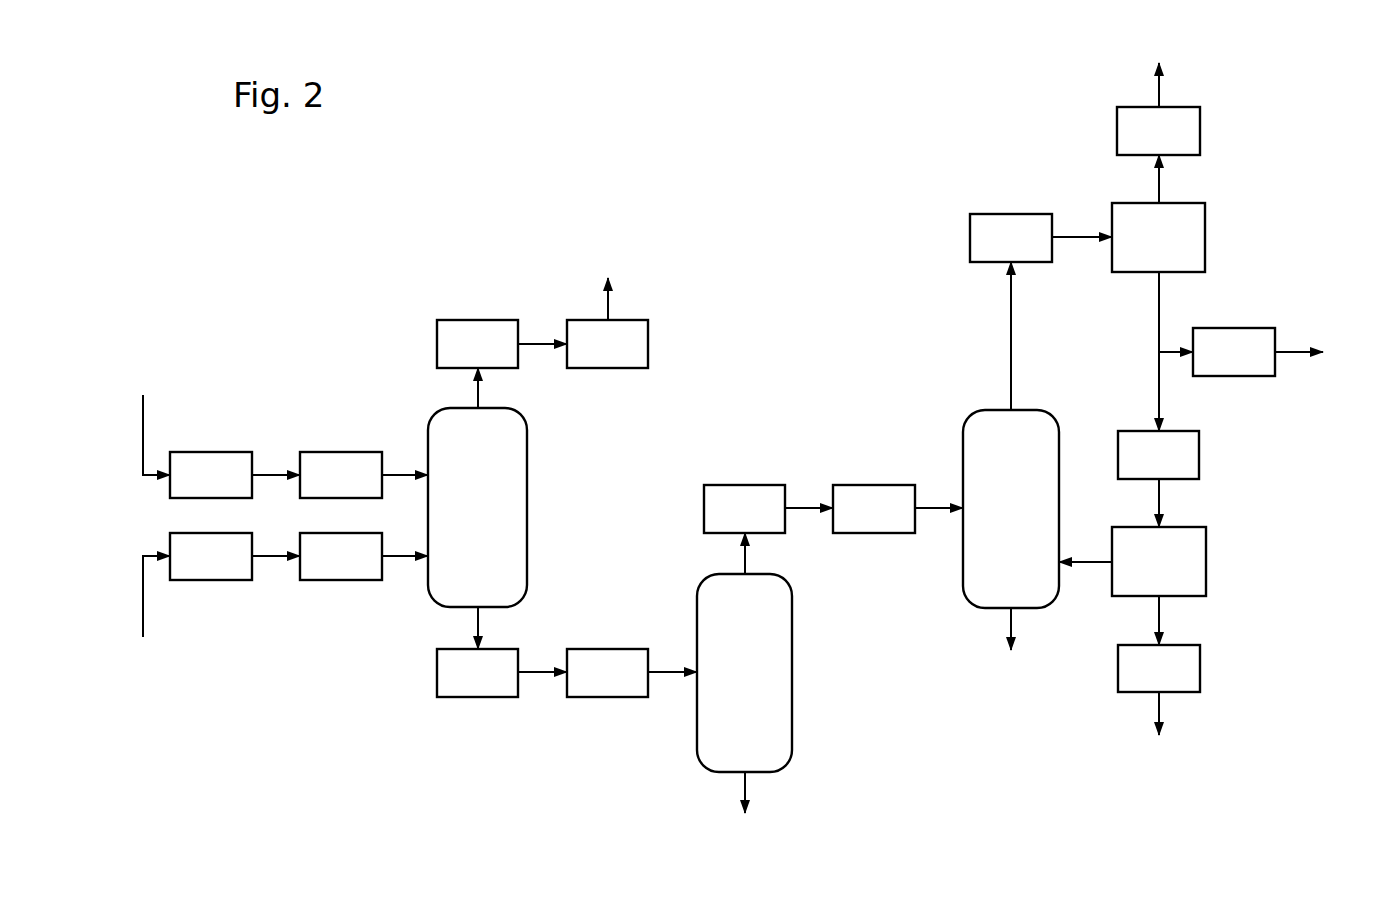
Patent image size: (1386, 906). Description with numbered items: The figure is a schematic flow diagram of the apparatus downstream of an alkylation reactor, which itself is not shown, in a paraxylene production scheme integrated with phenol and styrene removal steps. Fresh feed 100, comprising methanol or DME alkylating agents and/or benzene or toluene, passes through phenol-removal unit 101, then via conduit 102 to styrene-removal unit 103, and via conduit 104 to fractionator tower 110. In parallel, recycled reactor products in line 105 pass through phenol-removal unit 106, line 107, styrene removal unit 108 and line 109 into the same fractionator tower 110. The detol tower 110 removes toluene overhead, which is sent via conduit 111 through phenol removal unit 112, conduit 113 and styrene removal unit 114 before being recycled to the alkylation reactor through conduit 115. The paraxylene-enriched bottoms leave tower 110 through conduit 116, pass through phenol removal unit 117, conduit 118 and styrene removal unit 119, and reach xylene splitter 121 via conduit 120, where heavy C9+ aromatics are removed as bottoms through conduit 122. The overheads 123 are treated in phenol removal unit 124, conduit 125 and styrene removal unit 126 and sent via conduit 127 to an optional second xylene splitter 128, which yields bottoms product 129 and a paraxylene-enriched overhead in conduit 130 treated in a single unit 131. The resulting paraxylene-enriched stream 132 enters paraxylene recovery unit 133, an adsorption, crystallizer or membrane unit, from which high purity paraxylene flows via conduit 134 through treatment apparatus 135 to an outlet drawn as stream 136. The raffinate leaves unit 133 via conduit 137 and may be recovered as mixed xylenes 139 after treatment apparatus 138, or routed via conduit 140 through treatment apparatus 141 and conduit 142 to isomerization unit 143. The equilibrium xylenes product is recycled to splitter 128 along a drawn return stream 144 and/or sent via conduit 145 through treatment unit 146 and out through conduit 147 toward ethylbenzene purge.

The fresh feed 100 is at (143, 417).
The phenol-removal unit 101 is at (189, 487).
The conduit 102 is at (270, 475).
The styrene-removal unit 103 is at (319, 487).
The conduit 104 is at (410, 468).
The recycled reactor products line 105 is at (143, 613).
The phenol-removal unit 106 is at (189, 569).
The line 107 is at (268, 556).
The styrene removal unit 108 is at (319, 569).
The line 109 is at (408, 565).
The fractionator tower 110 is at (455, 520).
The conduit 111 is at (478, 395).
The phenol removal unit 112 is at (456, 356).
The conduit 113 is at (532, 343).
The styrene removal unit 114 is at (586, 356).
The conduit 115 is at (608, 305).
The conduit 116 is at (478, 621).
The phenol removal unit 117 is at (456, 685).
The conduit 118 is at (530, 672).
The styrene removal unit 119 is at (586, 685).
The conduit 120 is at (668, 672).
The xylene splitter 121 is at (722, 685).
The conduit 122 is at (745, 785).
The overheads 123 is at (745, 557).
The phenol removal unit 124 is at (723, 521).
The conduit 125 is at (800, 508).
The styrene removal unit 126 is at (852, 521).
The conduit 127 is at (932, 508).
The second xylene splitter 128 is at (988, 521).
The bottoms product 129 is at (1009, 622).
The overheads conduit 130 is at (1011, 323).
The phenol/styrene removal unit 131 is at (989, 250).
The paraxylene-enriched stream 132 is at (1083, 232).
The paraxylene recovery unit 133 is at (1136, 250).
The conduit 134 is at (1162, 185).
The phenol/styrene removal apparatus 135 is at (1137, 143).
The product outlet stream 136 is at (1162, 93).
The conduit 137 is at (1162, 308).
The styrene/phenol removal apparatus 138 is at (1212, 364).
The mixed xylenes 139 is at (1288, 345).
The conduit 140 is at (1162, 395).
The styrene/phenol removal apparatus 141 is at (1137, 467).
The conduit 142 is at (1162, 495).
The isomerization unit 143 is at (1136, 575).
The recycle stream 144 is at (1092, 565).
The conduit 145 is at (1162, 615).
The phenol/styrene removal unit 146 is at (1137, 681).
The conduit 147 is at (1162, 707).